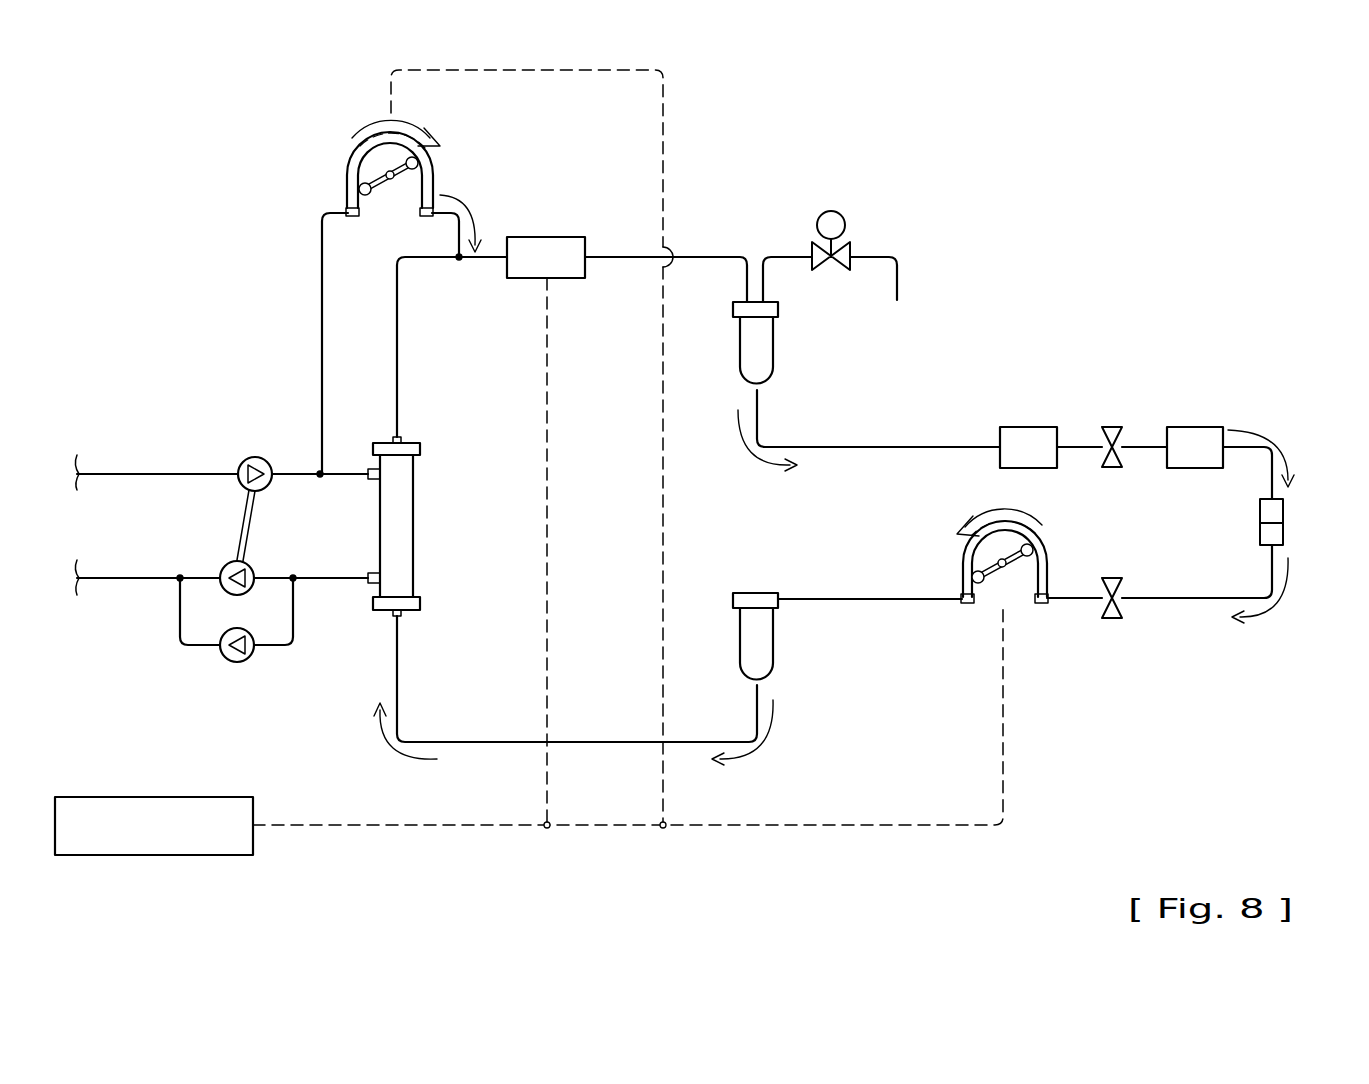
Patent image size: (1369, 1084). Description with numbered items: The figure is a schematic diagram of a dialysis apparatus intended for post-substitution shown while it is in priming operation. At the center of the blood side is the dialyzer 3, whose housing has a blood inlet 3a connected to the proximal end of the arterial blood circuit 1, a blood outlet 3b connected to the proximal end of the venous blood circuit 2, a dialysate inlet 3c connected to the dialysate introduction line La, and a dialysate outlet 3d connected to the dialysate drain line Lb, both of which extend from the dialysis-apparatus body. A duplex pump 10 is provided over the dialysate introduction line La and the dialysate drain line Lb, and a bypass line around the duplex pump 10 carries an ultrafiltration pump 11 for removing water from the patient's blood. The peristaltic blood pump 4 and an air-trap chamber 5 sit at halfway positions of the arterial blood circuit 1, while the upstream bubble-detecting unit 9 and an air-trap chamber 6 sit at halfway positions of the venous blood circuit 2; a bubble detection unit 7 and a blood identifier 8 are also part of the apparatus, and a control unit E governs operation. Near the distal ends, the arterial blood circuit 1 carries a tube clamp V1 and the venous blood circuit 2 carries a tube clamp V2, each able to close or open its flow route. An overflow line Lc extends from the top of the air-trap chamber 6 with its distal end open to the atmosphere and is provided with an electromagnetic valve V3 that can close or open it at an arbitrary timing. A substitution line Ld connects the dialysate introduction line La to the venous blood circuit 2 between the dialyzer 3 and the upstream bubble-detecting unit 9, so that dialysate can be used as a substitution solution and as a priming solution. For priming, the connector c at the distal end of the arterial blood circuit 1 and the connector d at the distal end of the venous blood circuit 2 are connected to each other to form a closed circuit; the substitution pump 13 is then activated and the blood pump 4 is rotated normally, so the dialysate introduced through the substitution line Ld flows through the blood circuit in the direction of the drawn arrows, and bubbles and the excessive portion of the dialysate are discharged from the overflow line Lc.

The arterial blood circuit 1 is at (396, 687).
The venous blood circuit 2 is at (891, 447).
The dialyzer 3 is at (431, 533).
The blood inlet 3a is at (404, 614).
The blood outlet 3b is at (402, 440).
The dialysate inlet 3c is at (372, 466).
The dialysate outlet 3d is at (370, 588).
The blood pump 4 is at (990, 622).
The air-trap chamber 5 is at (738, 640).
The air-trap chamber 6 is at (738, 348).
The bubble detection unit 7 is at (1040, 427).
The blood identifier 8 is at (1207, 427).
The upstream bubble-detecting unit 9 is at (535, 237).
The duplex pump 10 is at (219, 528).
The ultrafiltration pump 11 is at (240, 662).
The substitution pump 13 is at (316, 191).
The tube clamp V1 is at (1112, 578).
The tube clamp V2 is at (1112, 427).
The electromagnetic valve V3 is at (830, 211).
The dialysate introduction line La is at (110, 472).
The dialysate drain line Lb is at (110, 582).
The overflow line Lc is at (874, 252).
The substitution line Ld is at (320, 330).
The control unit E is at (153, 796).
The connector c is at (1285, 538).
The connector d is at (1285, 510).